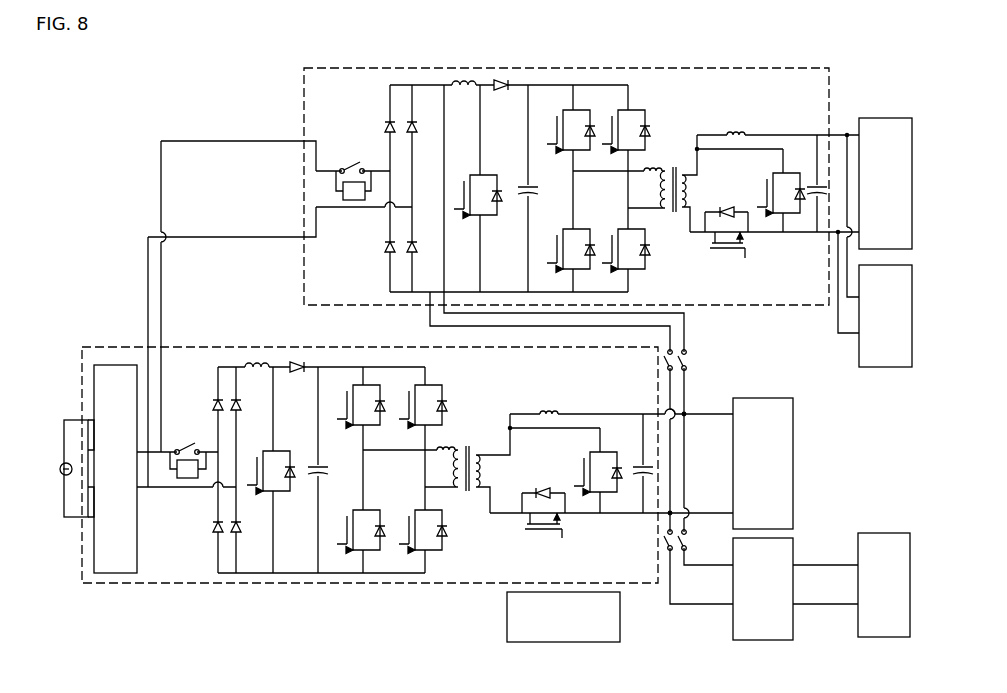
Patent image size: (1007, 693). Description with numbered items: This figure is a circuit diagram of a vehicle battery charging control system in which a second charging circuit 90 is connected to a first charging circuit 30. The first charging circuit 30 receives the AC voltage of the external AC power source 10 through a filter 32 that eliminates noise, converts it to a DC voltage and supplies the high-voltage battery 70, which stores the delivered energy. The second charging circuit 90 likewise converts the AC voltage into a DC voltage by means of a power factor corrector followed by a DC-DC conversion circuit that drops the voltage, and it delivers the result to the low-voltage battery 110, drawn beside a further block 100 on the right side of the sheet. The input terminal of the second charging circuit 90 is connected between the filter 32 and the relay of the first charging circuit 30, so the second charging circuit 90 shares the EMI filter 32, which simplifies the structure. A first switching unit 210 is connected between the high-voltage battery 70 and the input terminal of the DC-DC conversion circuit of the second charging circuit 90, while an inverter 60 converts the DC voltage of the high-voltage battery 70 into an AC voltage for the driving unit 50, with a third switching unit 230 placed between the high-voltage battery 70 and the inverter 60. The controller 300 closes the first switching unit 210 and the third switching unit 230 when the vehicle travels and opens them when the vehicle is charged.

The external AC power source 10 is at (63, 474).
The first charging circuit 30 is at (208, 345).
The filter 32 is at (116, 574).
The driving unit 50 is at (883, 533).
The inverter 60 is at (793, 620).
The high-voltage battery 70 is at (793, 455).
The second charging circuit 90 is at (795, 306).
The auxiliary battery 100 is at (887, 367).
The low-voltage battery 110 is at (884, 118).
The first switching unit 210 is at (687, 358).
The third switching unit 230 is at (687, 541).
The controller 300 is at (507, 612).